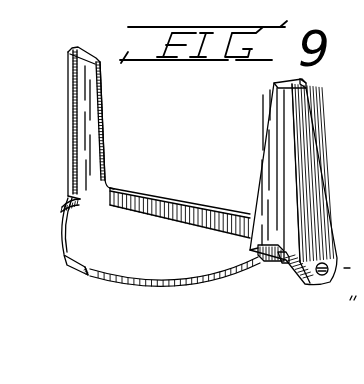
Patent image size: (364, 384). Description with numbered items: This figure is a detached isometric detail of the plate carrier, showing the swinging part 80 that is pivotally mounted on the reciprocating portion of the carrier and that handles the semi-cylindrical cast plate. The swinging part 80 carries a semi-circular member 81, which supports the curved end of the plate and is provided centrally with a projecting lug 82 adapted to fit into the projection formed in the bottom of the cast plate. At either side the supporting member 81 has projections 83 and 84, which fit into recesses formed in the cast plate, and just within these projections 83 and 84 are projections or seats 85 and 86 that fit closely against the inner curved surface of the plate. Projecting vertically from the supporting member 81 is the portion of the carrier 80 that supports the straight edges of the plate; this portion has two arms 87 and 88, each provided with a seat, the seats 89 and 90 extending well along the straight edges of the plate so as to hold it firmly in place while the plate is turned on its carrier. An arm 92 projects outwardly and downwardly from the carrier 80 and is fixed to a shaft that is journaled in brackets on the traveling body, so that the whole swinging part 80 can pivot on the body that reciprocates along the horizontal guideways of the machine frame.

The swinging part 80 is at (265, 254).
The semi-circular member 81 is at (138, 282).
The projecting lug 82 is at (72, 274).
The projection 83 is at (61, 207).
The projection 84 is at (283, 263).
The seat 85 is at (58, 199).
The seat 86 is at (259, 248).
The arm 87 is at (92, 122).
The arm 88 is at (276, 110).
The seat 89 is at (68, 85).
The seat 90 is at (288, 103).
The arm 92 is at (320, 278).